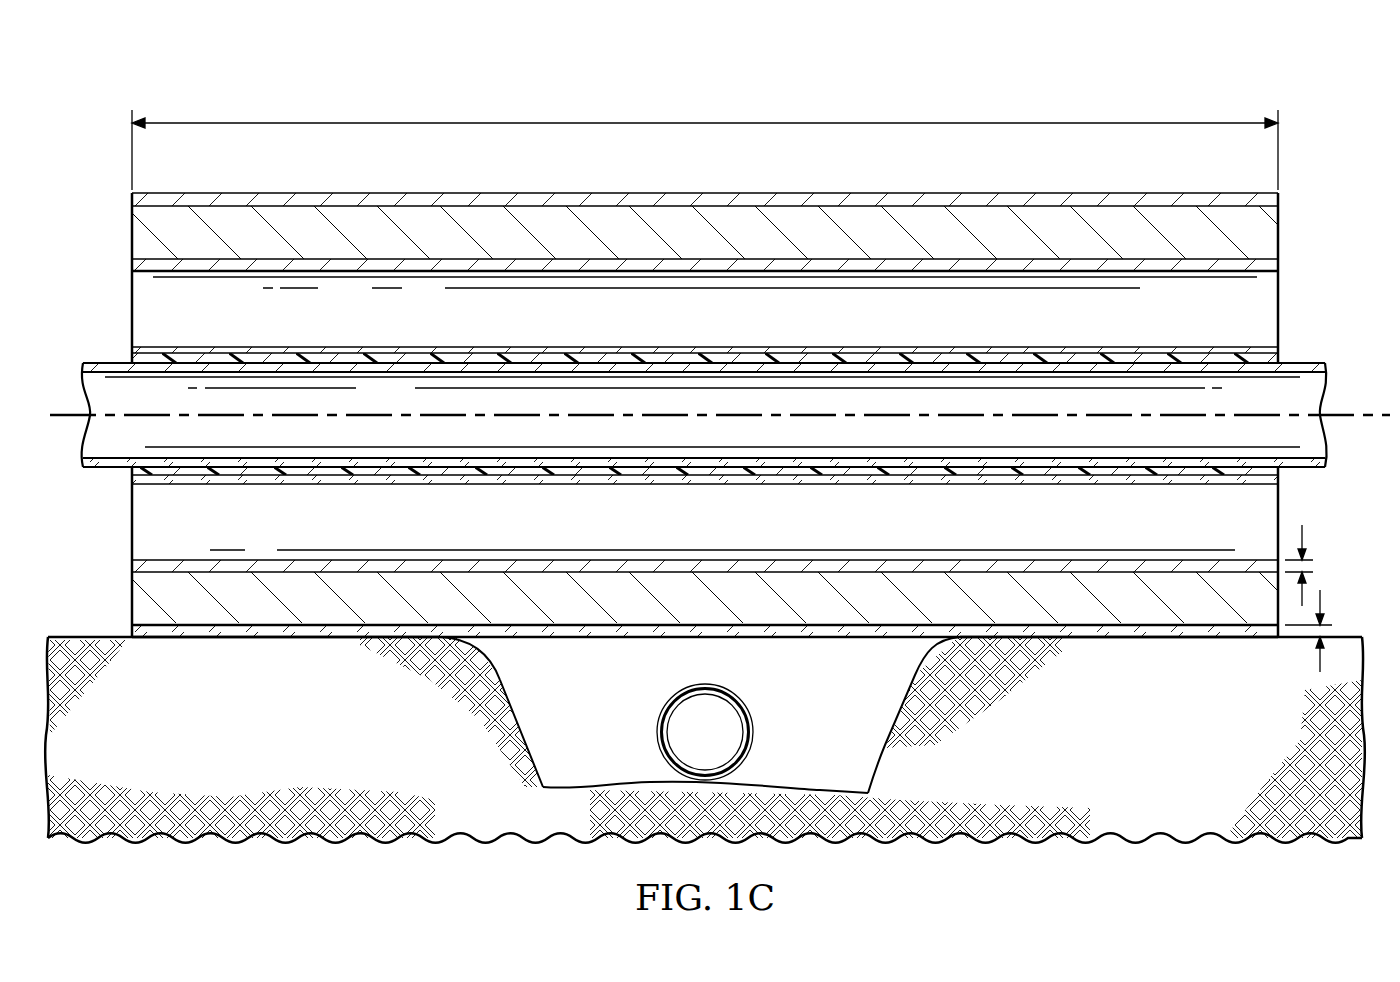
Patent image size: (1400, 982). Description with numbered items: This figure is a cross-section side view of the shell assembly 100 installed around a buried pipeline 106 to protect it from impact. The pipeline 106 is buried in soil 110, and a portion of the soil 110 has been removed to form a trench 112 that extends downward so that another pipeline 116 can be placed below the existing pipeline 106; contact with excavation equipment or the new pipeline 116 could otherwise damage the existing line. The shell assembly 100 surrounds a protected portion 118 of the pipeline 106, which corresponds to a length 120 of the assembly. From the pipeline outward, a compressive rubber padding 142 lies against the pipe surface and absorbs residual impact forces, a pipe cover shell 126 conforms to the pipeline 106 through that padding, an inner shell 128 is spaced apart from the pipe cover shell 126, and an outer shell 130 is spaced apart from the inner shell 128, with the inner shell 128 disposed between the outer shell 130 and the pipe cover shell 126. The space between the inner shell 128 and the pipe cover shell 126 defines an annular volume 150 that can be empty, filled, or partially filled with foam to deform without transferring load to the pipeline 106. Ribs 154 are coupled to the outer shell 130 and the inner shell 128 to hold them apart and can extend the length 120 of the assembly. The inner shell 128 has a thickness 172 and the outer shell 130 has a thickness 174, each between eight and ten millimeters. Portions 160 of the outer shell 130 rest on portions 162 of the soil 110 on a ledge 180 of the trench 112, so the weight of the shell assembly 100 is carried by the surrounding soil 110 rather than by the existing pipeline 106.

The shell assembly 100 is at (1056, 71).
The pipeline 106 is at (110, 470).
The soil 110 is at (1160, 783).
The trench 112 is at (1330, 253).
The another pipeline 116 is at (658, 728).
The protected portion 118 is at (468, 390).
The length 120 is at (705, 122).
The pipe cover shell 126 is at (357, 350).
The inner shell 128 is at (437, 265).
The outer shell 130 is at (464, 200).
The rubber padding 142 is at (140, 360).
The annular volume 150 is at (1268, 310).
The ribs 154 is at (793, 215).
The portions of the outer shell 160 is at (310, 604).
The portions of the soil 162 is at (348, 663).
The thickness of the inner shell 172 is at (1320, 600).
The thickness of the outer shell 174 is at (1302, 537).
The ledge 180 is at (190, 626).